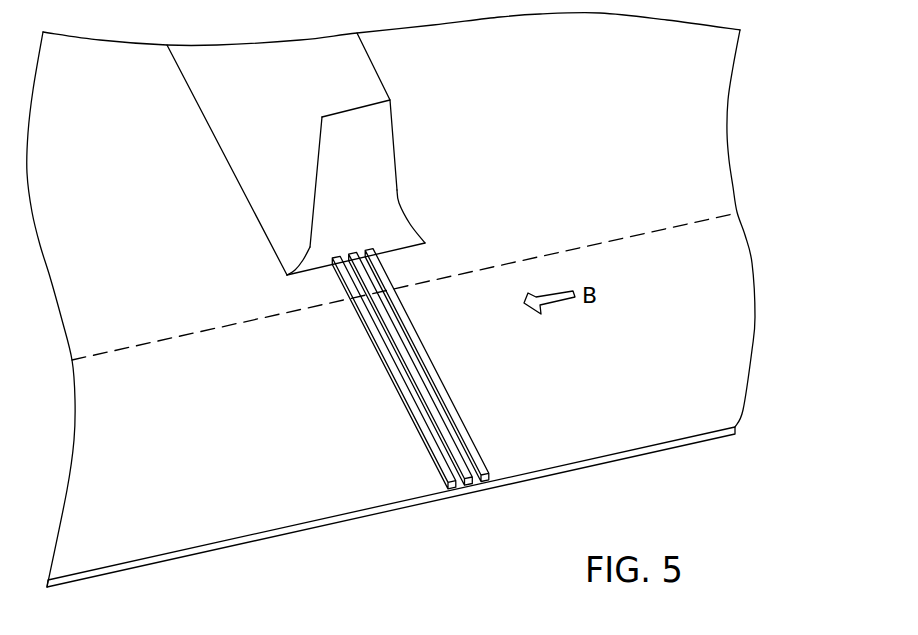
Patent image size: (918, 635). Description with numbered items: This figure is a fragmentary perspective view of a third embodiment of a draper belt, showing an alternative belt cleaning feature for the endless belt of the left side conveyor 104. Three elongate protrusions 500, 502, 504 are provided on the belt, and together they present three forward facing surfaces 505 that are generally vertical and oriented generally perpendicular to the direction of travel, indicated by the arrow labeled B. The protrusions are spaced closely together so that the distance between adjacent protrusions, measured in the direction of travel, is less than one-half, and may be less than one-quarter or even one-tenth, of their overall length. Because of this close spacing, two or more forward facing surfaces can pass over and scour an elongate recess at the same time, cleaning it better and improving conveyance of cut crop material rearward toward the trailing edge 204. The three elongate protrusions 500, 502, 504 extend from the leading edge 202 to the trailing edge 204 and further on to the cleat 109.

The left side conveyor 104 is at (667, 282).
The cleat 109 is at (367, 155).
The leading edge 202 is at (453, 490).
The trailing edge 204 is at (607, 238).
The elongate protrusion 500 is at (433, 443).
The elongate protrusion 502 is at (430, 400).
The elongate protrusion 504 is at (470, 435).
The forward facing surfaces 505 is at (419, 369).